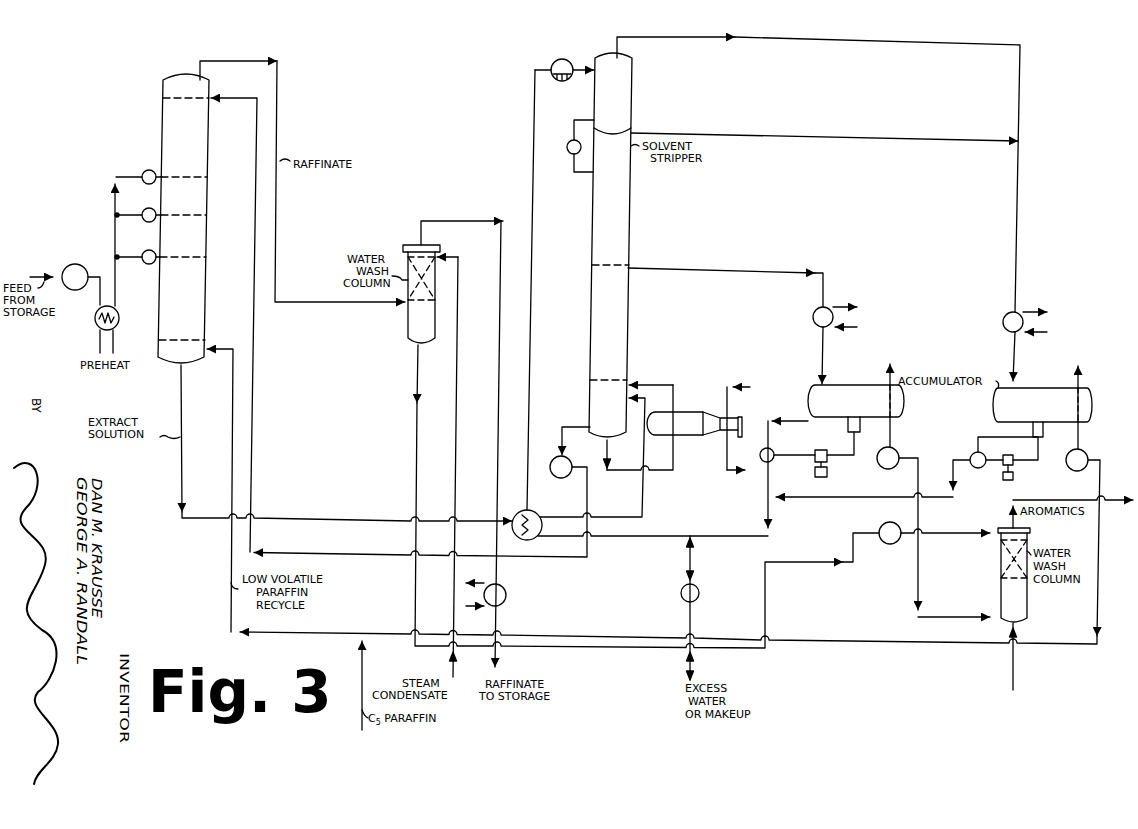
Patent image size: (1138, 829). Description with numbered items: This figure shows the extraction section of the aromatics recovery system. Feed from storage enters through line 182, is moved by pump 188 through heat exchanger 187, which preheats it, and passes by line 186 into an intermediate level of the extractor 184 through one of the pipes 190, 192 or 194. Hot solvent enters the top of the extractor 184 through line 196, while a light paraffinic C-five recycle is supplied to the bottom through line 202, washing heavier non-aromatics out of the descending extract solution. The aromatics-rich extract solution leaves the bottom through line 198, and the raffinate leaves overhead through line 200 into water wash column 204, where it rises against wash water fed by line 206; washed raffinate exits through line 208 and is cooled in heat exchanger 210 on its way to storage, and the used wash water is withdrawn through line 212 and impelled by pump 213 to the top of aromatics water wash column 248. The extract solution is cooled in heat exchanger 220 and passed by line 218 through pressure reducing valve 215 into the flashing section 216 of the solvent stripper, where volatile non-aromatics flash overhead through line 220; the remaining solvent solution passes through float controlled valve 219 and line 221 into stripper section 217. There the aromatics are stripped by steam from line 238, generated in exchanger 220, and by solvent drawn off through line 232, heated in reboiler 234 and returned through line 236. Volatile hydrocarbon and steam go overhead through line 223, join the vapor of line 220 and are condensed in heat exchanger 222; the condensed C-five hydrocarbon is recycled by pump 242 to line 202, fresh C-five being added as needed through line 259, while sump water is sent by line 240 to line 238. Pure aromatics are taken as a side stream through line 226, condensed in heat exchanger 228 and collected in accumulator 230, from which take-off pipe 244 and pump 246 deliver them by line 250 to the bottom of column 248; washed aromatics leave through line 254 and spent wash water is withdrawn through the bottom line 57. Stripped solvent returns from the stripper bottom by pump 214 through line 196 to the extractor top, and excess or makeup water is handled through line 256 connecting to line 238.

The water inlet line 57 is at (1014, 680).
The line 182 is at (38, 272).
The extractor 184 is at (212, 150).
The line 186 is at (121, 275).
The heat exchanger 187 is at (119, 322).
The pump 188 is at (78, 263).
The pipe 190 is at (118, 177).
The pipe 192 is at (118, 215).
The pipe 194 is at (117, 257).
The line 196 is at (257, 112).
The line 198 is at (181, 401).
The line 200 is at (283, 72).
The line 202 is at (232, 400).
The water wash column 204 is at (404, 247).
The line 206 is at (455, 372).
The line 208 is at (497, 390).
The heat exchanger 210 is at (499, 587).
The line 212 is at (418, 372).
The pump 213 is at (886, 549).
The pump 214 is at (574, 452).
The pressure reducing valve 215 is at (562, 56).
The solvent stripper section 216 is at (633, 93).
The solvent stripper section 217 is at (629, 223).
The line 218 is at (533, 230).
The float controlled valve 219 is at (567, 152).
The heat exchanger 220 is at (790, 38).
The line 221 is at (576, 117).
The heat exchanger 222 is at (1010, 310).
The line 223 is at (819, 130).
The line 226 is at (758, 272).
The heat exchanger 228 is at (811, 306).
The accumulator 230 is at (849, 375).
The line 232 is at (604, 452).
The reboiler 234 is at (694, 401).
The line 236 is at (656, 376).
The line 238 is at (766, 513).
The line 240 is at (870, 487).
The pump 242 is at (1084, 451).
The take-off pipe 244 is at (891, 427).
The pump 246 is at (906, 448).
The water wash column 248 is at (999, 568).
The line 250 is at (942, 617).
The line 254 is at (1086, 504).
The line 256 is at (691, 611).
The line 259 is at (364, 650).